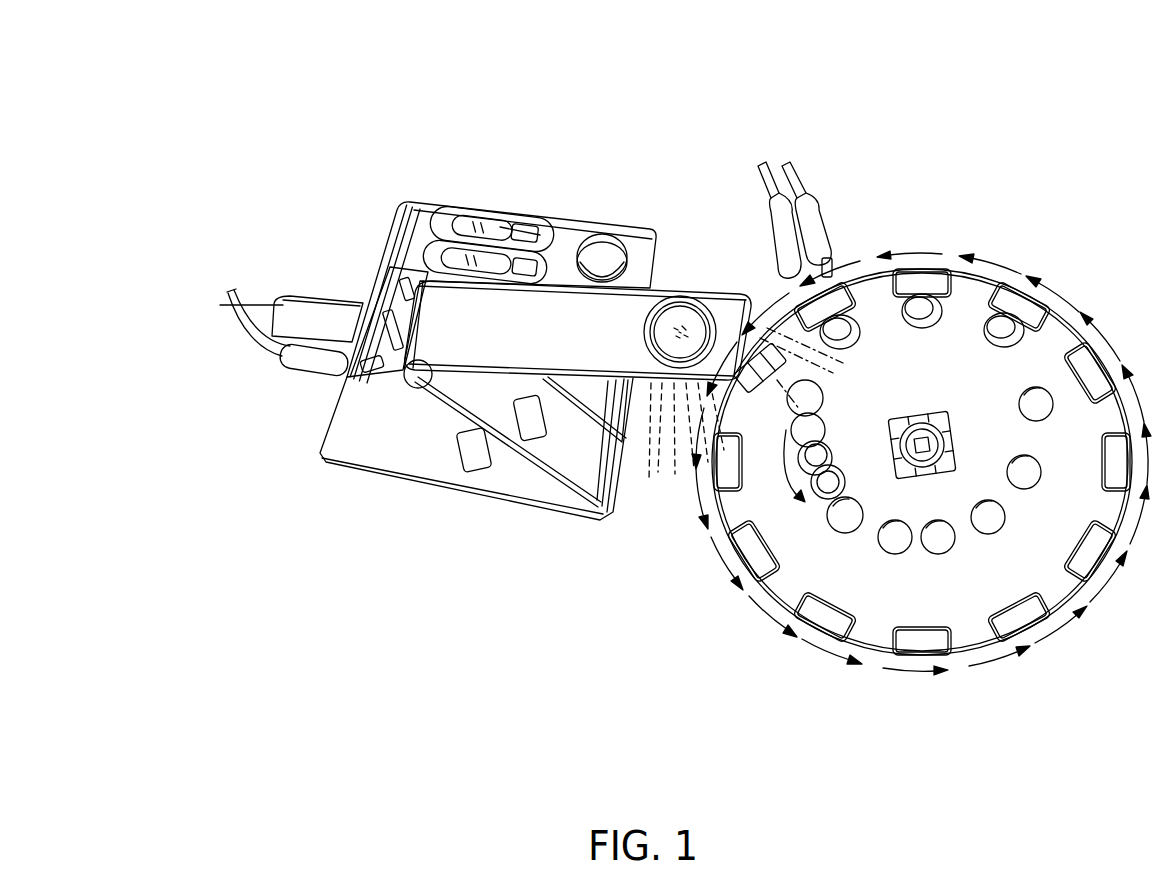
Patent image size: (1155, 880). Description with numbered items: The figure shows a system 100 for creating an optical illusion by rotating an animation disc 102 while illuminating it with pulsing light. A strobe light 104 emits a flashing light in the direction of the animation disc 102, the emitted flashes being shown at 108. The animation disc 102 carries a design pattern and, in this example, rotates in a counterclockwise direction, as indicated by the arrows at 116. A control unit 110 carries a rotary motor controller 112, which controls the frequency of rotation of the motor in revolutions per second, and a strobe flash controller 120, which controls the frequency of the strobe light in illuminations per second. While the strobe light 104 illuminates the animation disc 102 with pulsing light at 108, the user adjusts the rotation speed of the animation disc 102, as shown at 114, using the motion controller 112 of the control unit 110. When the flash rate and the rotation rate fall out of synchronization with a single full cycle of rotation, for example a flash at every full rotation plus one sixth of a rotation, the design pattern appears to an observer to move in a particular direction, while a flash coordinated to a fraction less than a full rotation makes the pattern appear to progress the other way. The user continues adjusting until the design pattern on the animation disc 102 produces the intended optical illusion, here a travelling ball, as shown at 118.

The system 100 is at (115, 60).
The animation disc 102 is at (1030, 250).
The strobe light 104 is at (685, 282).
The flashing light emission 108 is at (677, 460).
The control unit 110 is at (370, 237).
The rotary motor controller 112 is at (495, 212).
The rotation speed adjustment 114 is at (520, 223).
The counterclockwise rotation direction 116 is at (905, 673).
The optical illusion 118 is at (843, 440).
The strobe flash controller 120 is at (440, 245).